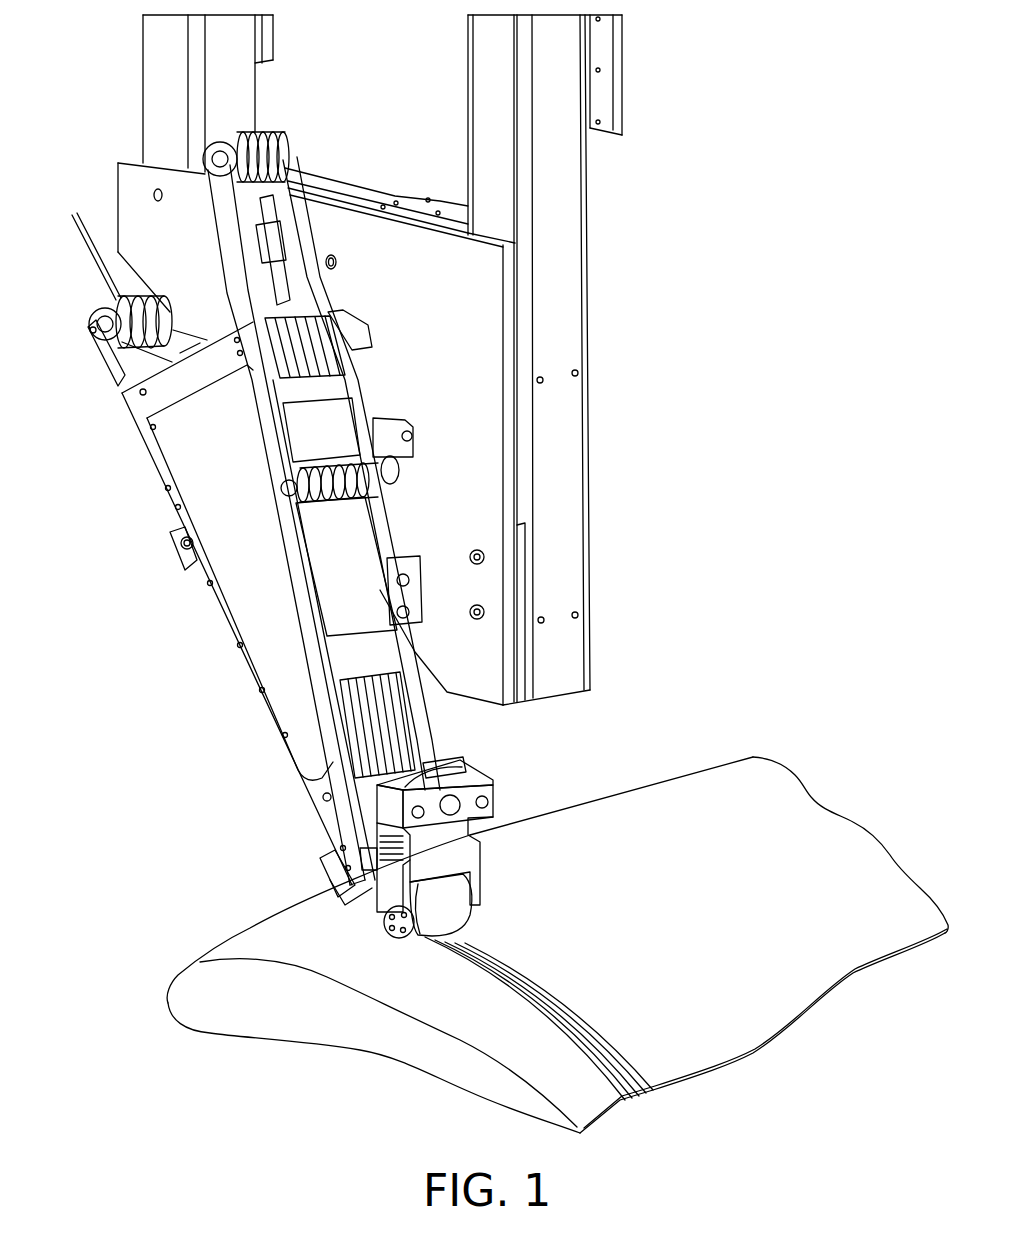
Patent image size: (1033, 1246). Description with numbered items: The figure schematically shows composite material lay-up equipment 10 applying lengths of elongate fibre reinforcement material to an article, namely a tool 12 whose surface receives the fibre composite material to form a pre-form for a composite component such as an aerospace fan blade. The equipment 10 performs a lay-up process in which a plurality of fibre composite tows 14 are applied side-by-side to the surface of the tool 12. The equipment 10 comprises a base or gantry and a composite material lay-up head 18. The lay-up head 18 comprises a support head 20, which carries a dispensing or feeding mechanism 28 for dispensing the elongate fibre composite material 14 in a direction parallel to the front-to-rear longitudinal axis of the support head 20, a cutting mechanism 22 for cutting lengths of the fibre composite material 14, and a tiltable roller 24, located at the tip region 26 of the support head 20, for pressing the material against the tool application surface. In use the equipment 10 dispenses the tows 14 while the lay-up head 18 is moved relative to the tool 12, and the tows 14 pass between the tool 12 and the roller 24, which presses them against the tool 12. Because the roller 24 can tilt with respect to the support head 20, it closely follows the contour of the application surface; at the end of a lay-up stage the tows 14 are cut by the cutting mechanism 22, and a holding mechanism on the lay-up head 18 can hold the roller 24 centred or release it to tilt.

The composite material lay-up equipment 10 is at (752, 142).
The tool 12 is at (773, 1025).
The fibre composite tows 14 is at (92, 268).
The composite material lay-up head 18 is at (255, 587).
The support head 20 is at (255, 637).
The cutting mechanism 22 is at (355, 733).
The tiltable roller 24 is at (430, 920).
The tip region 26 is at (330, 825).
The dispensing mechanism 28 is at (286, 142).